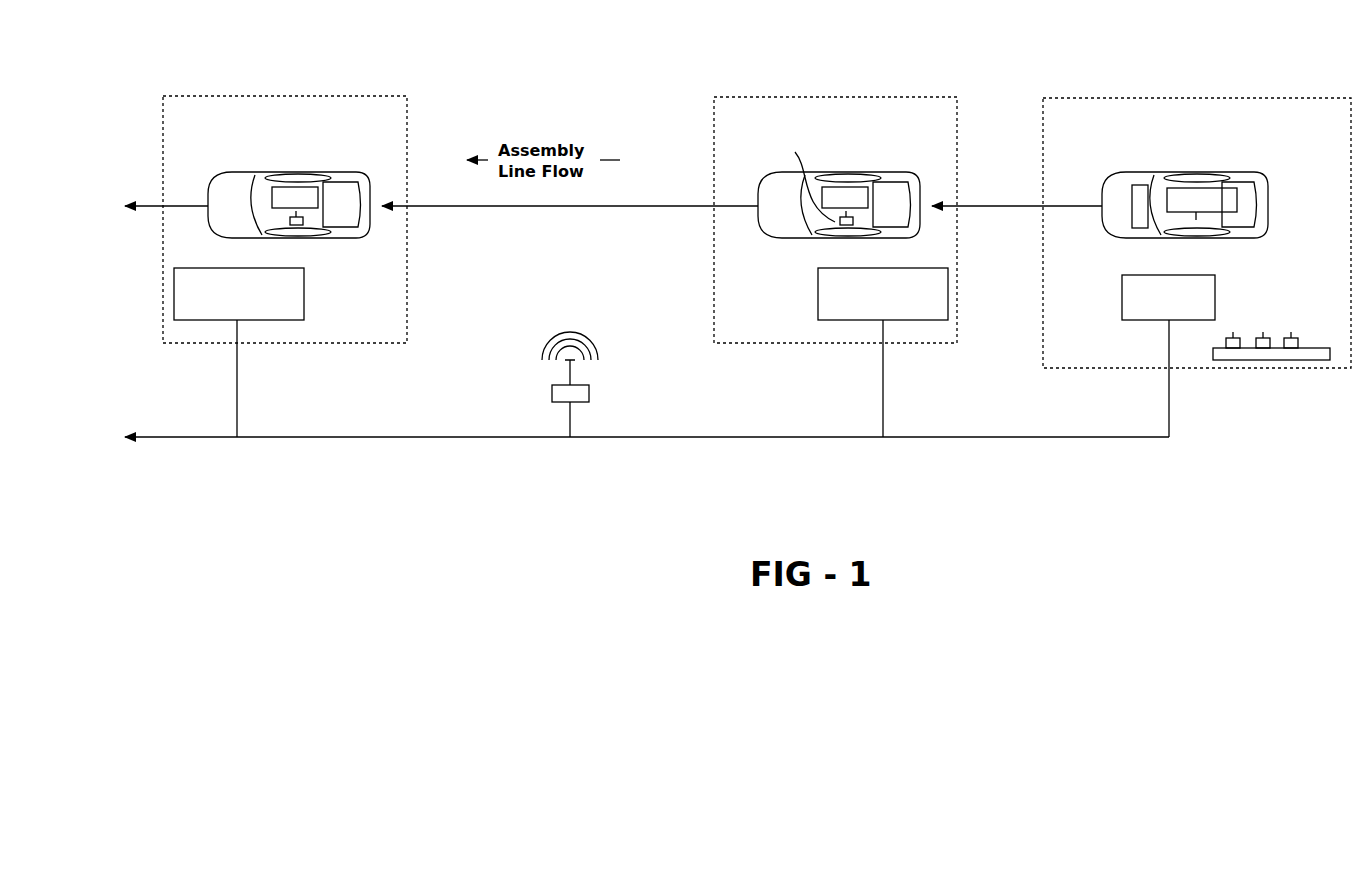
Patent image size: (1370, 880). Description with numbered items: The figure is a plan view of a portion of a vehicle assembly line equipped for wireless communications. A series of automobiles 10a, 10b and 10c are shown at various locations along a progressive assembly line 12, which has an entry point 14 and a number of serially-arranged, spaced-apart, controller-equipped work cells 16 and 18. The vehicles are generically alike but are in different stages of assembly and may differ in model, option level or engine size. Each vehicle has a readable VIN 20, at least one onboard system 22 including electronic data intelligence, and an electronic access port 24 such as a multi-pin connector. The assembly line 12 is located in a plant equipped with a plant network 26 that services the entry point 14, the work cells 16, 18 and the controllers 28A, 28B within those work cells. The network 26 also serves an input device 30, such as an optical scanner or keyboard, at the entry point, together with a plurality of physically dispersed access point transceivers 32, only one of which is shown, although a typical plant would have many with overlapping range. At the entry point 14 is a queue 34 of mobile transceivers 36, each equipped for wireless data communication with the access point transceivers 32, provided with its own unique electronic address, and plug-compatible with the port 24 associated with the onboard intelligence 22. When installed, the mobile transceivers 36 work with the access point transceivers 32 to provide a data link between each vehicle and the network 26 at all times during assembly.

The automobile 10a is at (1265, 180).
The automobile 10b is at (906, 180).
The automobile 10c is at (235, 178).
The progressive assembly line 12 is at (615, 207).
The entry point 14 is at (1290, 98).
The work cell 16 is at (958, 118).
The work cell 18 is at (410, 118).
The readable VIN 20 is at (1134, 195).
The onboard system 22 is at (300, 190).
The electronic access port 24 is at (1197, 215).
The plant network 26 is at (808, 438).
The controller 28A is at (818, 290).
The controller 28B is at (304, 308).
The input device 30 is at (1122, 300).
The access point transceiver 32 is at (552, 393).
The queue of mobile transceivers 34 is at (1256, 360).
The mobile transceiver 36 is at (303, 228).